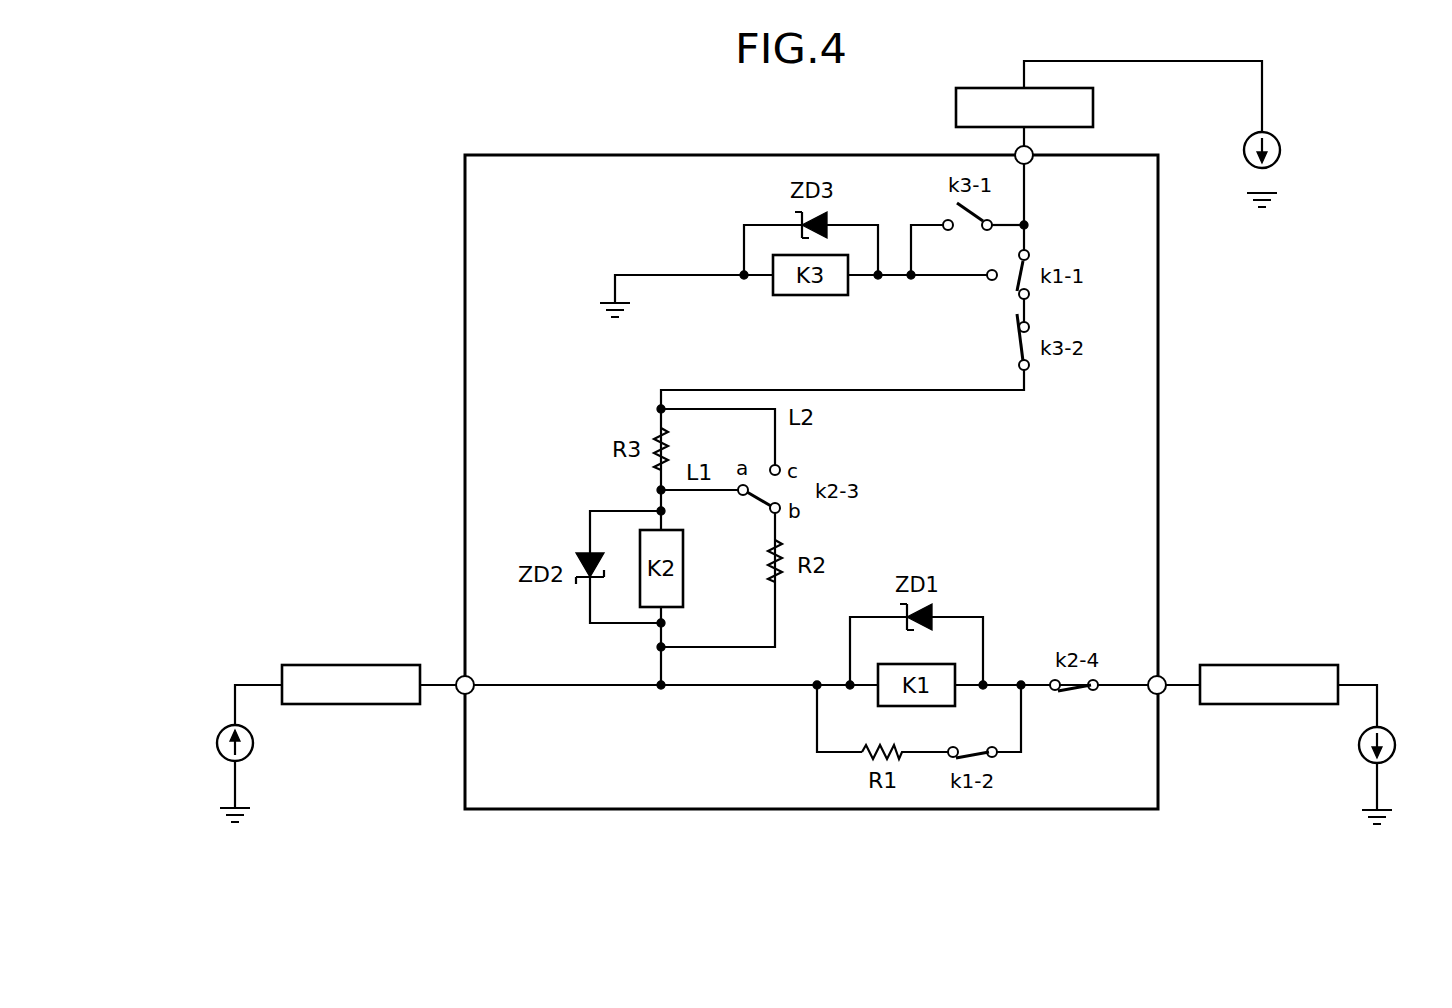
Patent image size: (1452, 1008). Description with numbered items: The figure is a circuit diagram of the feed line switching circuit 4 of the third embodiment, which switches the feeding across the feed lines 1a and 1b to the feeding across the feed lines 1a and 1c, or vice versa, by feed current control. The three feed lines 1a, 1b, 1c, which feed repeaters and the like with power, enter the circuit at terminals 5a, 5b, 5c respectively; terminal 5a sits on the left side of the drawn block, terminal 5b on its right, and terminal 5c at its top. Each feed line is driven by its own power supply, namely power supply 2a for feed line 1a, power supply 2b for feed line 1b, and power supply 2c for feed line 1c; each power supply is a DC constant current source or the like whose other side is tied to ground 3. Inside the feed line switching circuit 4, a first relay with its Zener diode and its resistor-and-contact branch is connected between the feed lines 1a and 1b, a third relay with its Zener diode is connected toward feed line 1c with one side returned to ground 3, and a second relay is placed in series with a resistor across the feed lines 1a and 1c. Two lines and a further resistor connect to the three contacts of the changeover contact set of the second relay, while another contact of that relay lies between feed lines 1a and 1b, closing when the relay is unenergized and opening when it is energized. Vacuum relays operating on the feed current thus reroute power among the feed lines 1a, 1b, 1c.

The feed line 1a is at (351, 665).
The feed line 1b is at (1269, 665).
The feed line 1c is at (954, 108).
The power supply 2a is at (258, 744).
The power supply 2b is at (1398, 736).
The power supply 2c is at (1283, 145).
The ground 3 is at (1283, 198).
The feed line switching circuit 4 is at (461, 786).
The terminal 5a is at (471, 678).
The terminal 5b is at (1164, 692).
The terminal 5c is at (1031, 162).